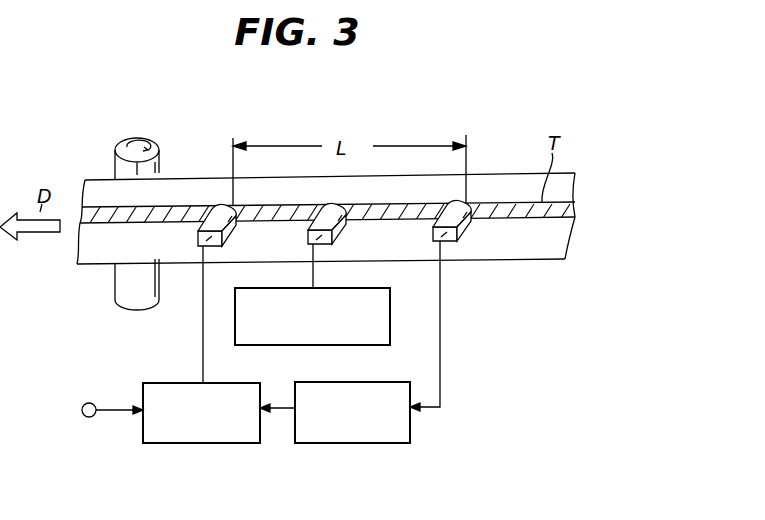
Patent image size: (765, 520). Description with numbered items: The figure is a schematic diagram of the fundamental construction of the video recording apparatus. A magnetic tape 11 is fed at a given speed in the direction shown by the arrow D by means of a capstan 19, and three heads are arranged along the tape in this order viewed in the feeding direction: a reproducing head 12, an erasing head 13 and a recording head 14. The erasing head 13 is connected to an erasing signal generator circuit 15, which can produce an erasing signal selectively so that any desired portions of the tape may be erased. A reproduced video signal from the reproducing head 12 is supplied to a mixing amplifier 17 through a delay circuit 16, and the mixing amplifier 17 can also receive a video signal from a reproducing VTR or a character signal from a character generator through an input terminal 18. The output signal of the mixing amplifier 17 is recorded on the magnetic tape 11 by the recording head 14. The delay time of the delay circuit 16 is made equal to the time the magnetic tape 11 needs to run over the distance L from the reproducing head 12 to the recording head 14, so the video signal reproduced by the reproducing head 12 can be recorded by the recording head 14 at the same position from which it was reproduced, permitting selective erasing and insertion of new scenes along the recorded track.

The magnetic tape 11 is at (497, 173).
The reproducing head 12 is at (463, 239).
The erasing head 13 is at (343, 230).
The recording head 14 is at (230, 205).
The erasing signal generator circuit 15 is at (268, 347).
The delay circuit 16 is at (348, 443).
The mixing amplifier 17 is at (187, 443).
The input terminal 18 is at (89, 403).
The capstan 19 is at (120, 143).